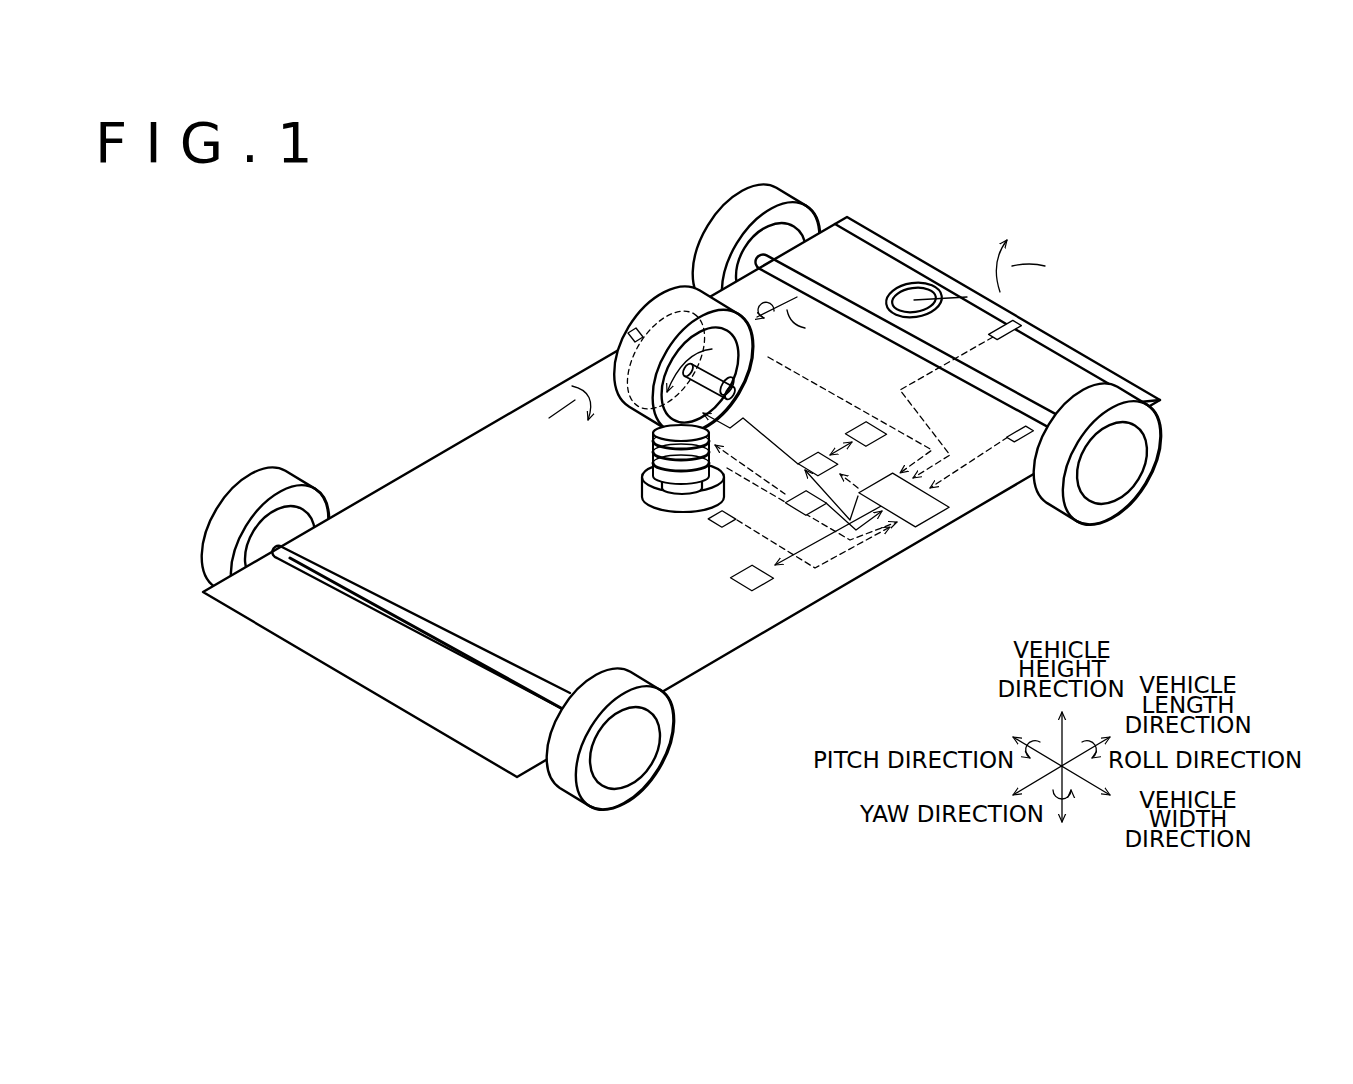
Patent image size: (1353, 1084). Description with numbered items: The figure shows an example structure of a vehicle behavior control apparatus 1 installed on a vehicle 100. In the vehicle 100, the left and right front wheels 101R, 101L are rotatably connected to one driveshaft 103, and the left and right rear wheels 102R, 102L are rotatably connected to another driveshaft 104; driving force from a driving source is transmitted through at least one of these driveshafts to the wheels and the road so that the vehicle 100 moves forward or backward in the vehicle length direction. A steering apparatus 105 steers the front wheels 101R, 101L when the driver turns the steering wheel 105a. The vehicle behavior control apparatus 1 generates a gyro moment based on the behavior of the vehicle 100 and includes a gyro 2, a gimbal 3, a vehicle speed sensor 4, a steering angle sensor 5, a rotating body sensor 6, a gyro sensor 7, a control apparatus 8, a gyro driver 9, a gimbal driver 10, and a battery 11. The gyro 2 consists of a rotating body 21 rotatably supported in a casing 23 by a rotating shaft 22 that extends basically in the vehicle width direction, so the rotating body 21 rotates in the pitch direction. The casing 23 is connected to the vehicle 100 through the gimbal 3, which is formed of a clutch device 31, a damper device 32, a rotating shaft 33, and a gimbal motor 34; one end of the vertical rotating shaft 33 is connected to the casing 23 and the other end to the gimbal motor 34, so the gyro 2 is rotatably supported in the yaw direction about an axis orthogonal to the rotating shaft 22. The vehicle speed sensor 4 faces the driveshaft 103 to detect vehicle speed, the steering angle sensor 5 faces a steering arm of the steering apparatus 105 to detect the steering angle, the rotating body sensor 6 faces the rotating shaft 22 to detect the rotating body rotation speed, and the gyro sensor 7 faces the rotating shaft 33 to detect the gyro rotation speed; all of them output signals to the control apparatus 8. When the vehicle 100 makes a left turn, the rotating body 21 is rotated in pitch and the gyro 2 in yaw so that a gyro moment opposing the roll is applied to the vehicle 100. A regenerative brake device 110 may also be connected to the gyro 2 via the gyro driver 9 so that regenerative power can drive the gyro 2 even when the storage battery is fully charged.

The vehicle behavior control apparatus 1 is at (283, 323).
The gyro 2 is at (651, 348).
The rotating body 21 is at (668, 326).
The rotating shaft 22 is at (628, 363).
The casing 23 is at (633, 337).
The gimbal 3 is at (633, 484).
The clutch device 31 is at (647, 448).
The damper device 32 is at (657, 478).
The rotating shaft 33 is at (657, 433).
The gimbal motor 34 is at (653, 507).
The vehicle speed sensor 4 is at (1007, 430).
The steering angle sensor 5 is at (1015, 337).
The rotating body sensor 6 is at (747, 387).
The gyro sensor 7 is at (712, 530).
The control apparatus 8 is at (949, 497).
The gyro driver 9 is at (812, 458).
The gimbal driver 10 is at (790, 508).
The battery 11 is at (845, 435).
The vehicle 100 is at (711, 491).
The left front wheel 101L is at (730, 210).
The right front wheel 101R is at (1140, 492).
The left rear wheel 102L is at (242, 498).
The right rear wheel 102R is at (657, 778).
The driveshaft 103 is at (907, 342).
The driveshaft 104 is at (427, 622).
The steering apparatus 105 is at (953, 283).
The steering wheel 105a is at (890, 290).
The regenerative brake device 110 is at (735, 585).